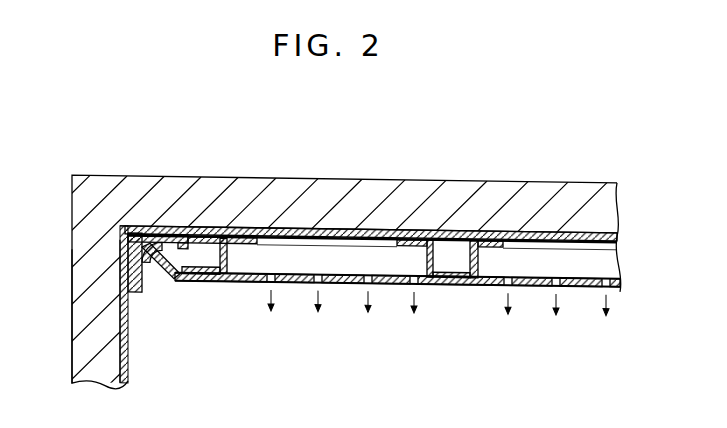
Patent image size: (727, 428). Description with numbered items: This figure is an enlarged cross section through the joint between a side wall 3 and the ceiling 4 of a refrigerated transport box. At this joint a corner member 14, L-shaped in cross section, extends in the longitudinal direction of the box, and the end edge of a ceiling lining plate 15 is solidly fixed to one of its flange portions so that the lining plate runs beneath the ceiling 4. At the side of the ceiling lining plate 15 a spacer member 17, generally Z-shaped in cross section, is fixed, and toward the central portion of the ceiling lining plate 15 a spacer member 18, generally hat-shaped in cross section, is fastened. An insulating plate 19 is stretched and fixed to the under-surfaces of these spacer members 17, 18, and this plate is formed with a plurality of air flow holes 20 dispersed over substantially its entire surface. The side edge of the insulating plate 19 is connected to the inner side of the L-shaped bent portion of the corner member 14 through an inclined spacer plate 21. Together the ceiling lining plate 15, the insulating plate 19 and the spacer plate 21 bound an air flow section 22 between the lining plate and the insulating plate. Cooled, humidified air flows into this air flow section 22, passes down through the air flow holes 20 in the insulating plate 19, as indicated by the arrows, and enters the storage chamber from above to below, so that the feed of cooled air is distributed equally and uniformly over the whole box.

The side wall 3 is at (72, 323).
The ceiling 4 is at (616, 205).
The corner member 14 is at (146, 233).
The ceiling lining plate 15 is at (352, 230).
The spacer member 17 is at (256, 240).
The spacer member 18 is at (424, 257).
The insulating plate 19 is at (448, 284).
The air flow holes 20 is at (314, 285).
The spacer plate 21 is at (158, 279).
The air flow section 22 is at (300, 243).